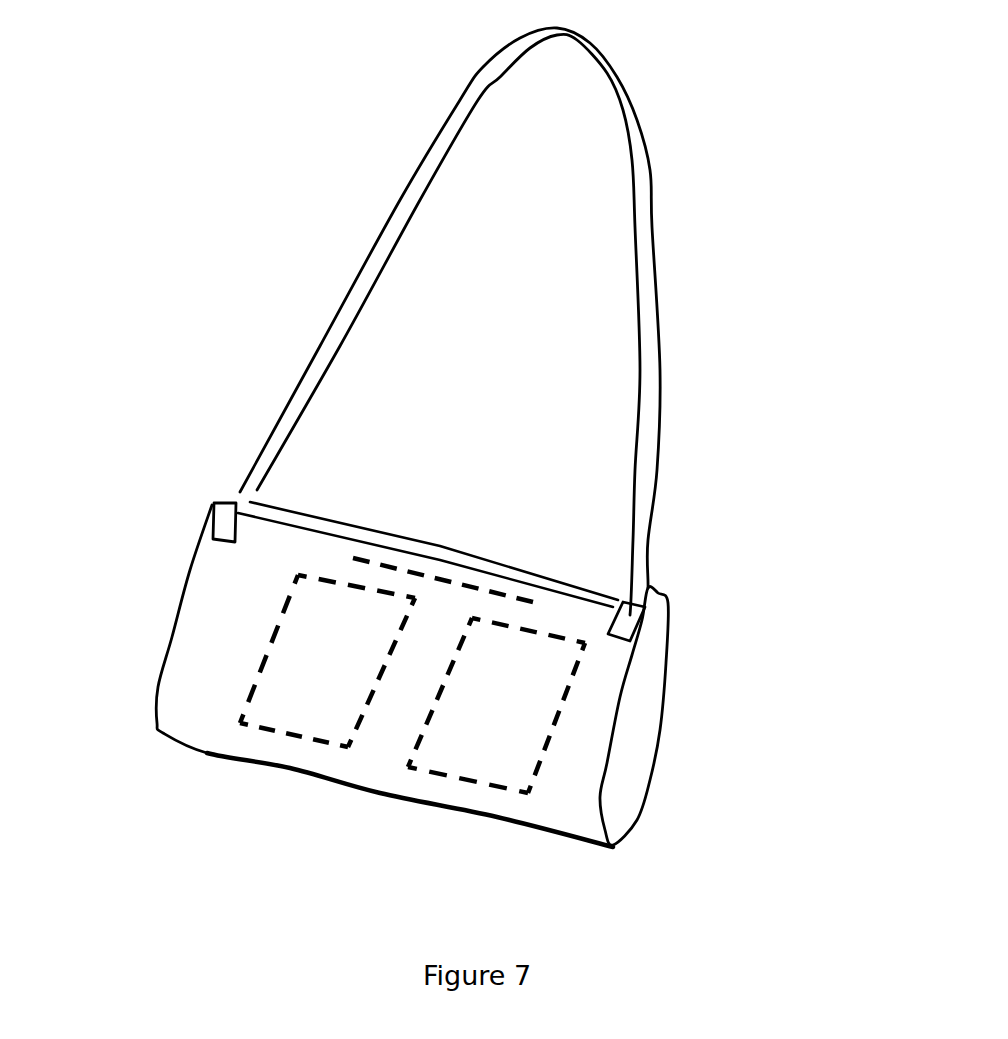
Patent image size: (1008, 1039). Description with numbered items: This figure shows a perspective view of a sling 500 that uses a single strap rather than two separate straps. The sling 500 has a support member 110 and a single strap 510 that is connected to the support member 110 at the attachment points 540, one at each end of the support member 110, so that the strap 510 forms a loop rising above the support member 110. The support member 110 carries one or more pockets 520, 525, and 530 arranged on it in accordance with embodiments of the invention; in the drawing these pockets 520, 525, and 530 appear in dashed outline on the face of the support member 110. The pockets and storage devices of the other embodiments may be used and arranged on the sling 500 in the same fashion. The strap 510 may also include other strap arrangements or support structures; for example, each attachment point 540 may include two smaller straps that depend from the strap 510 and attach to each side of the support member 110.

The sling 500 is at (783, 198).
The single strap 510 is at (645, 207).
The pocket 520 is at (570, 697).
The pocket 525 is at (268, 667).
The pocket 530 is at (427, 577).
The attachment point 540 is at (238, 488).
The support member 110 is at (643, 777).